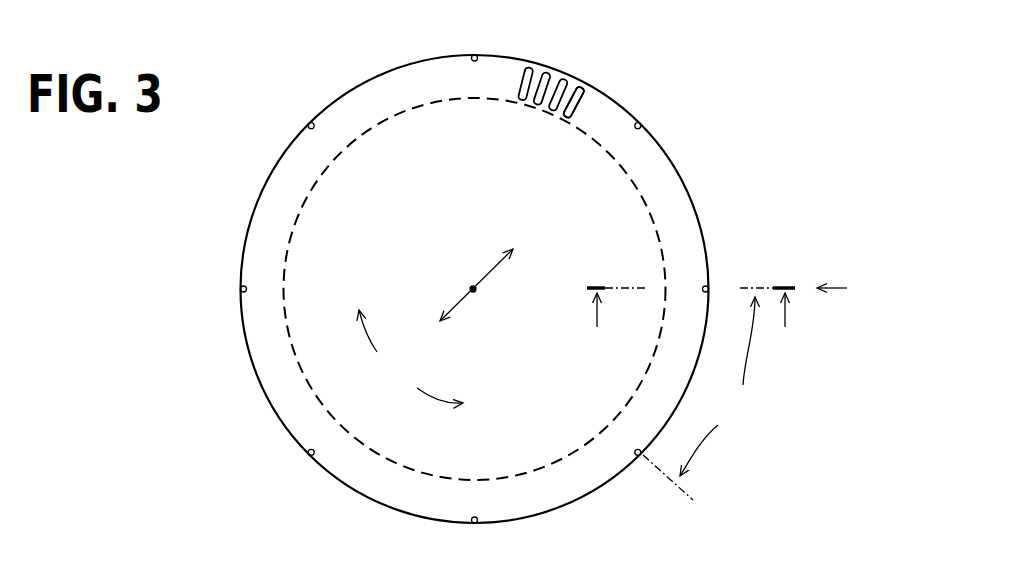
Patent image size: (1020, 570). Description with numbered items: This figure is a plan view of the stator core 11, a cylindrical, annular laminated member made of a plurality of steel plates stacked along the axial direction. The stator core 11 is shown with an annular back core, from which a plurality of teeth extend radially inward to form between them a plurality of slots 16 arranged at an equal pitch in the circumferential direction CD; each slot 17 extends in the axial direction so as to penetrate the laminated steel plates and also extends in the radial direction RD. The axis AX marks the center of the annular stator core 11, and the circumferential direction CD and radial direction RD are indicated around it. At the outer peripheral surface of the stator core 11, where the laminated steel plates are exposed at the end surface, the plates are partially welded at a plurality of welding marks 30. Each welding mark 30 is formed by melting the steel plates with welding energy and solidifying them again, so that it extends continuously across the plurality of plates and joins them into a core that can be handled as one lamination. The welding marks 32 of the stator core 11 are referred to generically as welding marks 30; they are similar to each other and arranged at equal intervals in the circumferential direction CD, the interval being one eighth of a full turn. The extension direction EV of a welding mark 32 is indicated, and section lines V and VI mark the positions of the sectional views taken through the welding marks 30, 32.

The stator core 11 is at (711, 147).
The vent piece group / vent holes 16 is at (579, 110).
The vent piece / slit 17 is at (577, 82).
The welding mark 30 is at (709, 287).
The welding mark of the stator core 32 is at (643, 456).
The axis AX is at (473, 289).
The radial direction RD is at (494, 272).
The circumferential direction CD is at (411, 356).
The extension direction / view EV is at (717, 386).
The section line V is at (848, 290).
The section line VI is at (696, 322).